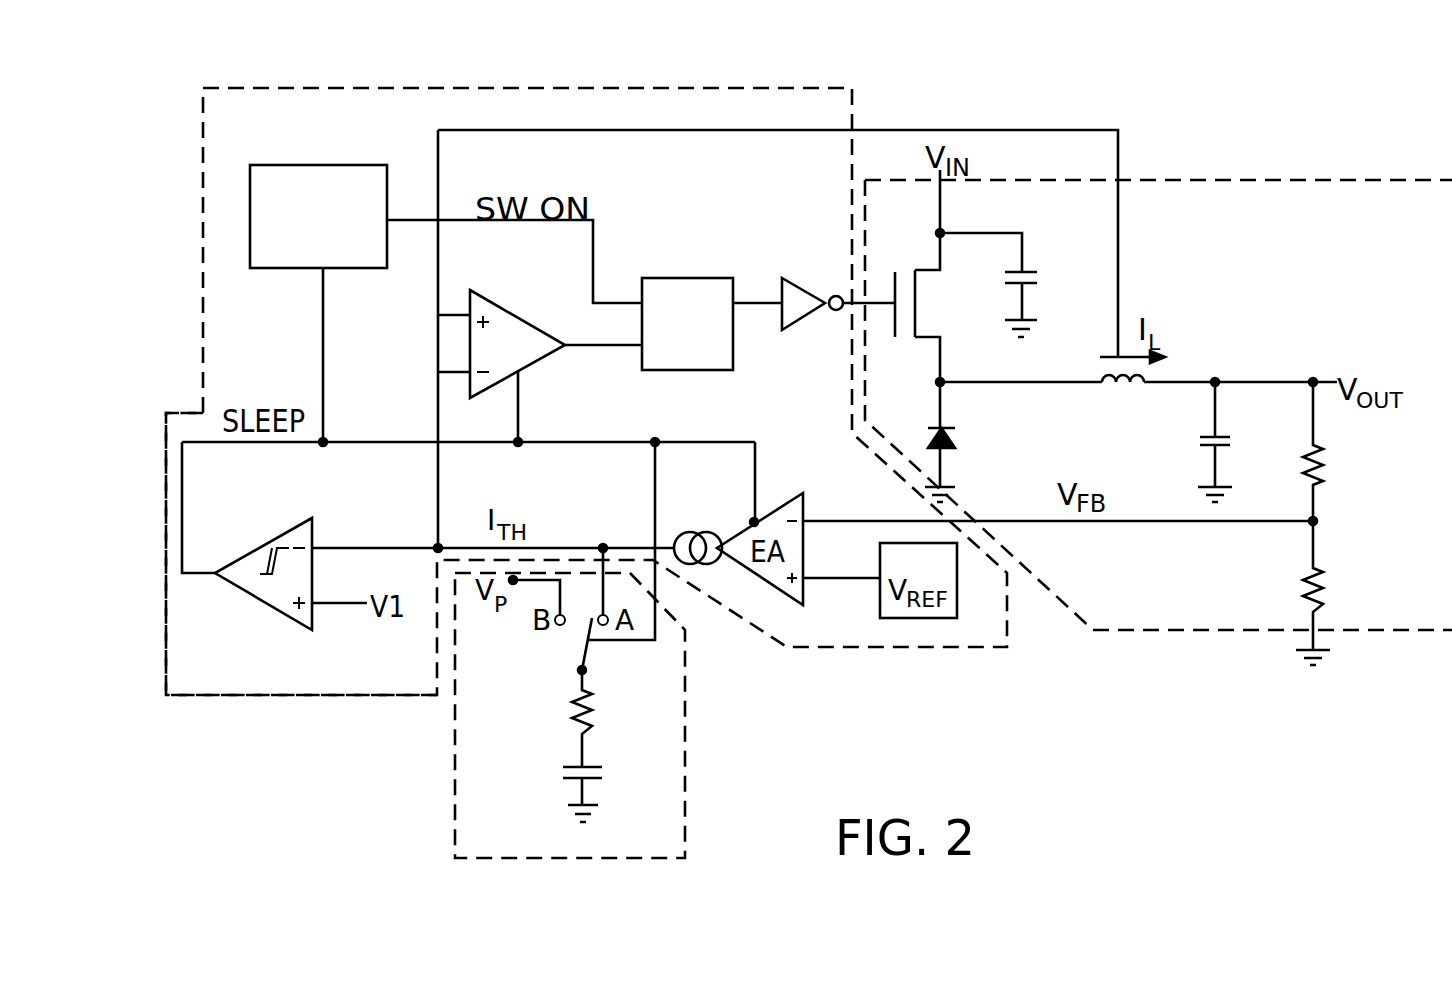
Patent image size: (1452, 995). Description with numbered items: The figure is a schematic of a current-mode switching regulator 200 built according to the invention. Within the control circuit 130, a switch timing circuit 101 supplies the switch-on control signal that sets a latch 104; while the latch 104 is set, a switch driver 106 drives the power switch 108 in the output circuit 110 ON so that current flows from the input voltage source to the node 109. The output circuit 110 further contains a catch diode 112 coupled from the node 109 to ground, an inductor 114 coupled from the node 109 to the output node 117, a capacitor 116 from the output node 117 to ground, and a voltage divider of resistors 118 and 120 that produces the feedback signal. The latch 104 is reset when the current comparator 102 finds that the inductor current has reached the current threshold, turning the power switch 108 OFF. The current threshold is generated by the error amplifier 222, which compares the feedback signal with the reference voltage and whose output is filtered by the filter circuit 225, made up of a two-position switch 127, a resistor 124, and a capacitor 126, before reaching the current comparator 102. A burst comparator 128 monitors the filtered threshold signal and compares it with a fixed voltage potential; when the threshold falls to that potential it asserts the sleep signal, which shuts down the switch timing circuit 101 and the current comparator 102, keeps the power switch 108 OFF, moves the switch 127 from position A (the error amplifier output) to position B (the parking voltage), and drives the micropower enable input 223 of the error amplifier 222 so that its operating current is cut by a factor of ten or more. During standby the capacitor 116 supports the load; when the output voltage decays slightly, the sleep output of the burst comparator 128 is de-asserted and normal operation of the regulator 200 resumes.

The switch timing circuit 101 is at (312, 165).
The current comparator 102 is at (533, 367).
The latch 104 is at (673, 278).
The switch driver 106 is at (802, 322).
The power switch 108 is at (927, 267).
The node 109 is at (942, 382).
The output circuit 110 is at (1212, 178).
The catch diode 112 is at (955, 440).
The inductor 114 is at (1142, 387).
The capacitor 116 is at (1220, 435).
The output node 117 is at (1313, 382).
The resistor 118 is at (1322, 458).
The resistor 120 is at (1322, 587).
The resistor 124 is at (573, 713).
The capacitor 126 is at (577, 757).
The two-position switch 127 is at (580, 670).
The burst comparator 128 is at (263, 605).
The control circuit 130 is at (343, 695).
The current-mode switching regulator 200 is at (1217, 85).
The error amplifier 222 is at (743, 522).
The MICROPOWER ENABLE input 223 is at (754, 520).
The filter circuit 225 is at (563, 858).